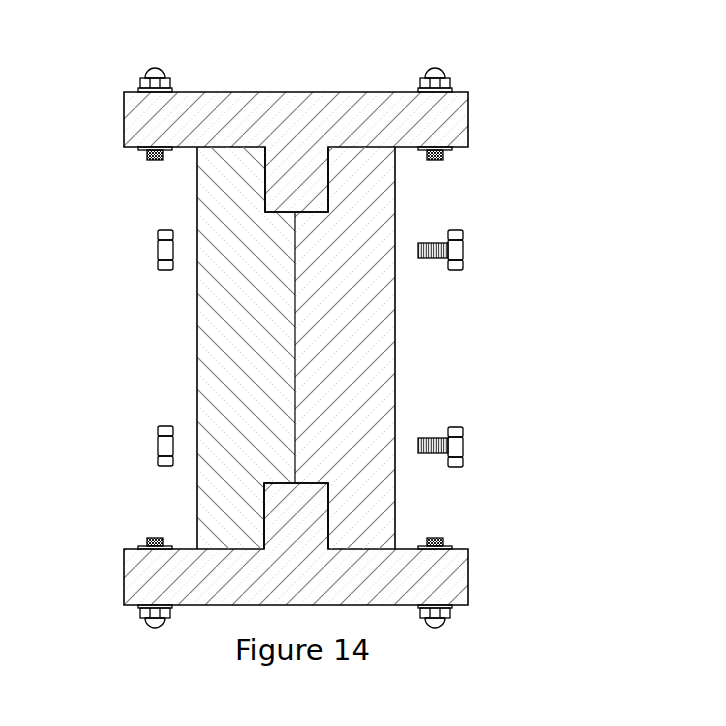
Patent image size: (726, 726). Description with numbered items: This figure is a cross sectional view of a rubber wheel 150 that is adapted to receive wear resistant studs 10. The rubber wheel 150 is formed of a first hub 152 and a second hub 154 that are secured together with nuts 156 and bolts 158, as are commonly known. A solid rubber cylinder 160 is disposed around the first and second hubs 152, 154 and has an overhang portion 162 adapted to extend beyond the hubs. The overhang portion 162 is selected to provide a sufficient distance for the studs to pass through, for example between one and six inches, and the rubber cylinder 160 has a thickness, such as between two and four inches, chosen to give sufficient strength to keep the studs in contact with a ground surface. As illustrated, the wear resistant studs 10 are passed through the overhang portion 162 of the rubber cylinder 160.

The wear resistant stud 10 is at (149, 52).
The rubber wheel 150 is at (350, 318).
The first hub 152 is at (395, 347).
The second hub 154 is at (197, 348).
The nut 156 is at (463, 252).
The bolt 158 is at (157, 250).
The solid rubber cylinder 160 is at (270, 92).
The overhang portion 162 is at (133, 150).